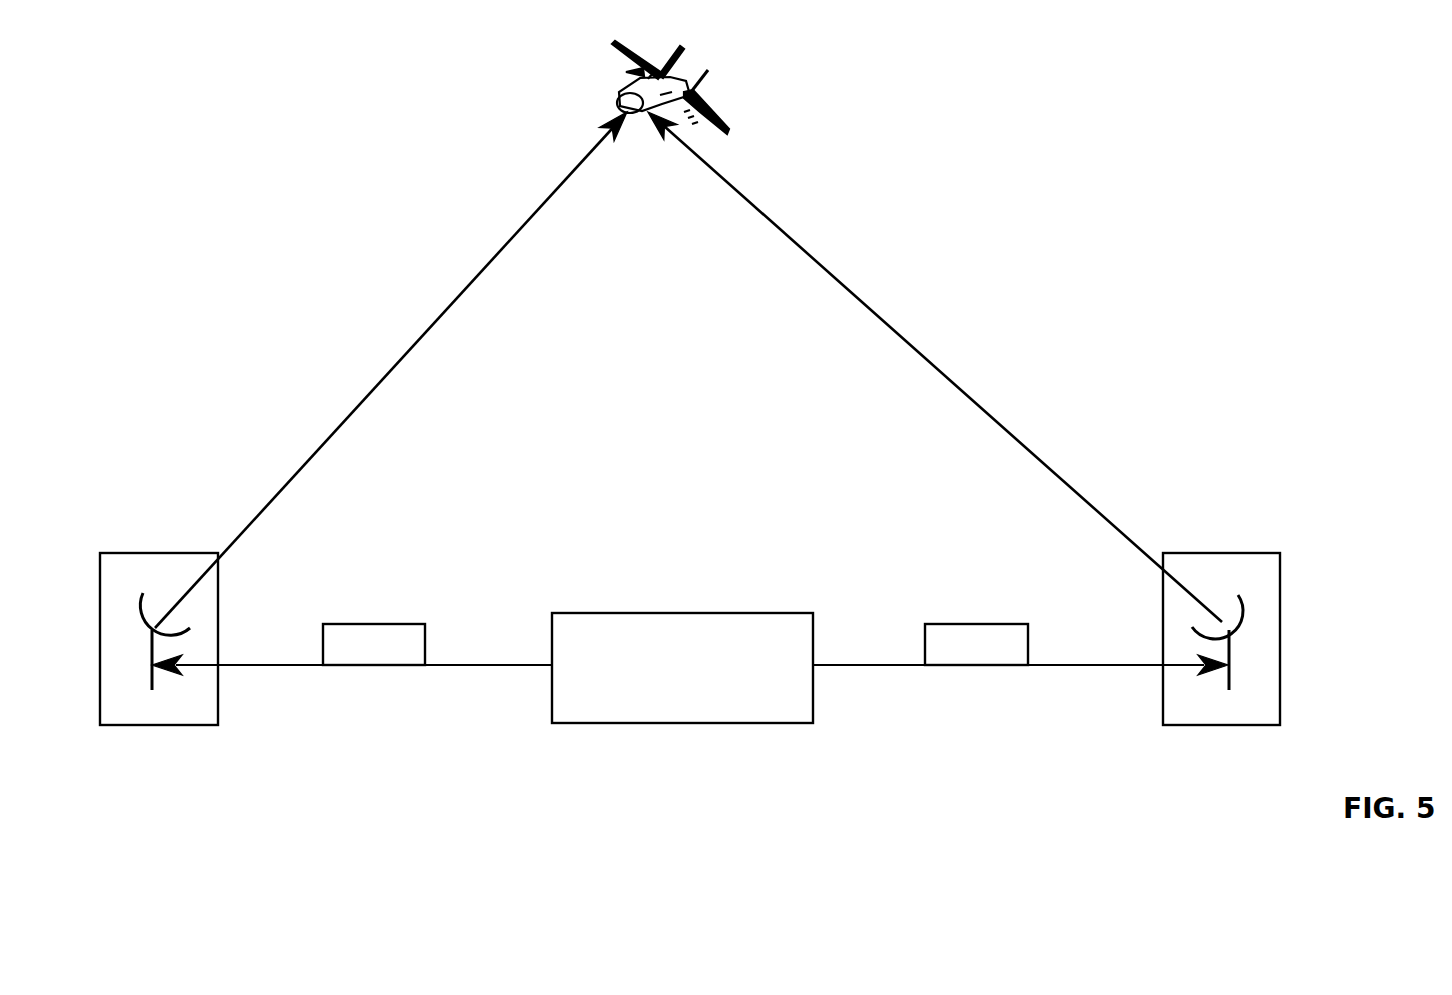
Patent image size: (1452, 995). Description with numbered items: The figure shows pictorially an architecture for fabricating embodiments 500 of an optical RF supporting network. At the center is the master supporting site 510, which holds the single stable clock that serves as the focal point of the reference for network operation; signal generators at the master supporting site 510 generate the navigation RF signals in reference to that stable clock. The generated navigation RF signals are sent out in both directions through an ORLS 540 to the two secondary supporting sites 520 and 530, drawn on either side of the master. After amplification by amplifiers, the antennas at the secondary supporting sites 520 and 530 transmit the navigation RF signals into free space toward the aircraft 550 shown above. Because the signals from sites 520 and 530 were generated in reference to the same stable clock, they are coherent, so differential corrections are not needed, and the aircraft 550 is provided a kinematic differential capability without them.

The optical RF supporting network architecture embodiment 500 is at (1398, 736).
The master supporting site 510 is at (690, 686).
The secondary supporting site 520 is at (363, 438).
The secondary supporting site 530 is at (964, 438).
The ORLS 540 is at (675, 628).
The aircraft 550 is at (688, 85).